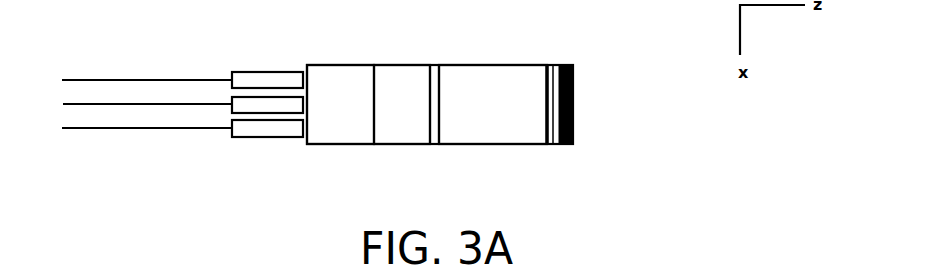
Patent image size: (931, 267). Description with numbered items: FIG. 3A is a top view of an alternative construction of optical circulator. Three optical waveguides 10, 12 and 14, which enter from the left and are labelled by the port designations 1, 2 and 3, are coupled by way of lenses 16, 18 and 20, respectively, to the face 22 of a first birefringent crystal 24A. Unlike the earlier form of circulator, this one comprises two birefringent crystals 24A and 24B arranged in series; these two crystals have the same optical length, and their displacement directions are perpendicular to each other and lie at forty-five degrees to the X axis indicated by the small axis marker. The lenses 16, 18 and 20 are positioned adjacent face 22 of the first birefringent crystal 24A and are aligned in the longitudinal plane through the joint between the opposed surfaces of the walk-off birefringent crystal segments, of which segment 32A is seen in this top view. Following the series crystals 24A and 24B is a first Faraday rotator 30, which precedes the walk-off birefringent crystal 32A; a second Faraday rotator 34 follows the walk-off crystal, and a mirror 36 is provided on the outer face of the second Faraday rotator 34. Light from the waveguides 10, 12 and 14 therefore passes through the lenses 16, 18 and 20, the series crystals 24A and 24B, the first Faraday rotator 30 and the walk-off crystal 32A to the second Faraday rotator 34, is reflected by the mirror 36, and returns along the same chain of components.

The first input channel 1 is at (133, 80).
The second input channel 2 is at (133, 104).
The third input channel 3 is at (133, 132).
The optical waveguide 10 is at (114, 79).
The optical waveguide 12 is at (131, 103).
The optical waveguide 14 is at (111, 128).
The lens 16 is at (248, 72).
The lens 18 is at (270, 97).
The lens 20 is at (255, 133).
The face of first birefringent crystal 22 is at (308, 141).
The birefringent crystal 24A is at (337, 88).
The birefringent crystal 24B is at (400, 78).
The first Faraday rotator 30 is at (433, 144).
The birefringent crystal segment 32A is at (490, 82).
The second Faraday rotator 34 is at (555, 72).
The mirror 36 is at (570, 65).